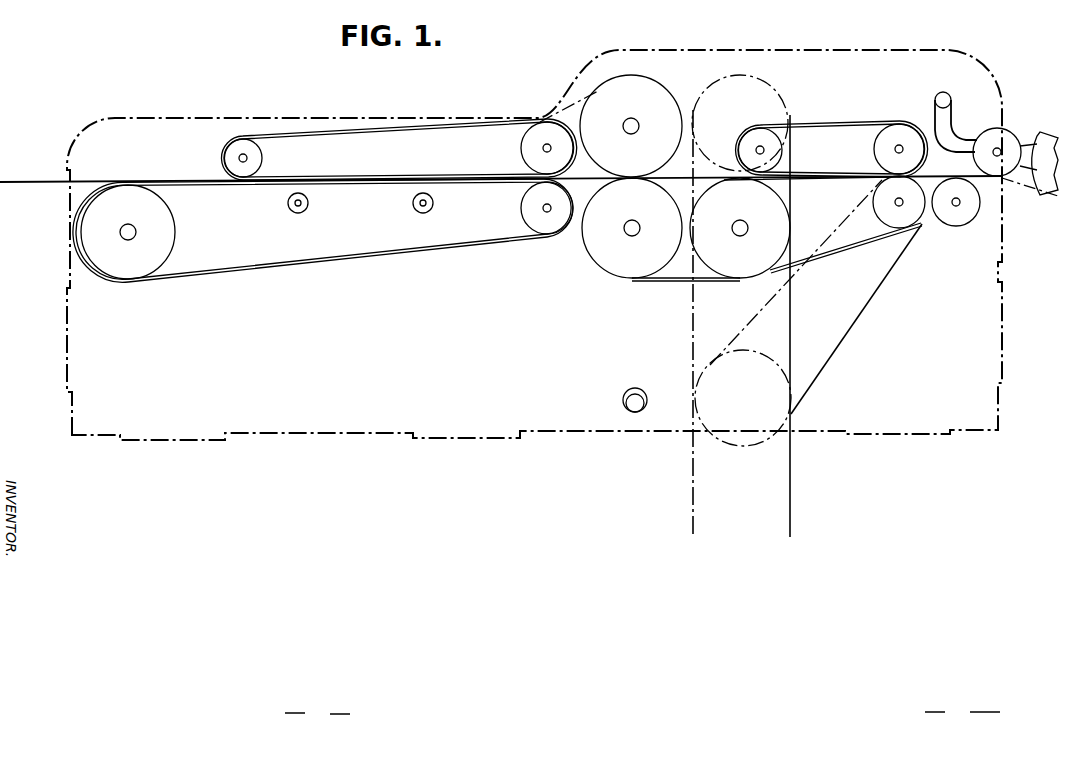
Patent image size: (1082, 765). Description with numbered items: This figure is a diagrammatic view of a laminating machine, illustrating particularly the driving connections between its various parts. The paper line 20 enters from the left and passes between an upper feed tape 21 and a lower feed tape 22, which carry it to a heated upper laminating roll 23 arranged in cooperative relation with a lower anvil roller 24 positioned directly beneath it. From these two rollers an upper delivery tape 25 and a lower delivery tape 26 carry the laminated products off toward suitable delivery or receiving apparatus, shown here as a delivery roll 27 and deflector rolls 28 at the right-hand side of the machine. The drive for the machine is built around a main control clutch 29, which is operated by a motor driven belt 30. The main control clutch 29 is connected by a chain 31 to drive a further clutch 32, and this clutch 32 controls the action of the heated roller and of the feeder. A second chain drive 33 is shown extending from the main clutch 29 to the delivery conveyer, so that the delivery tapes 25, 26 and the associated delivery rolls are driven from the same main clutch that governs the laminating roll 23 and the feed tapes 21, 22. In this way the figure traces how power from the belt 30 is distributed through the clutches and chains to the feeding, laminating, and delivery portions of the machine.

The paper line 20 is at (38, 180).
The upper feed tape 21 is at (455, 157).
The lower feed tape 22 is at (380, 183).
The heated upper laminating roll 23 is at (647, 86).
The lower anvil roller 24 is at (596, 258).
The upper delivery tape 25 is at (812, 172).
The lower delivery tape 26 is at (812, 181).
The delivery roll 27 is at (953, 214).
The deflector rolls 28 is at (1010, 148).
The main control clutch 29 is at (782, 346).
The motor driven belt 30 is at (695, 480).
The chain 31 is at (693, 294).
The clutch 32 is at (772, 90).
The second chain drive 33 is at (842, 336).